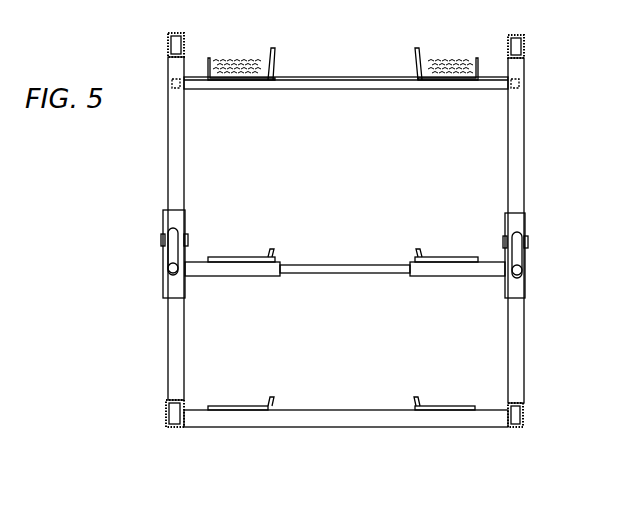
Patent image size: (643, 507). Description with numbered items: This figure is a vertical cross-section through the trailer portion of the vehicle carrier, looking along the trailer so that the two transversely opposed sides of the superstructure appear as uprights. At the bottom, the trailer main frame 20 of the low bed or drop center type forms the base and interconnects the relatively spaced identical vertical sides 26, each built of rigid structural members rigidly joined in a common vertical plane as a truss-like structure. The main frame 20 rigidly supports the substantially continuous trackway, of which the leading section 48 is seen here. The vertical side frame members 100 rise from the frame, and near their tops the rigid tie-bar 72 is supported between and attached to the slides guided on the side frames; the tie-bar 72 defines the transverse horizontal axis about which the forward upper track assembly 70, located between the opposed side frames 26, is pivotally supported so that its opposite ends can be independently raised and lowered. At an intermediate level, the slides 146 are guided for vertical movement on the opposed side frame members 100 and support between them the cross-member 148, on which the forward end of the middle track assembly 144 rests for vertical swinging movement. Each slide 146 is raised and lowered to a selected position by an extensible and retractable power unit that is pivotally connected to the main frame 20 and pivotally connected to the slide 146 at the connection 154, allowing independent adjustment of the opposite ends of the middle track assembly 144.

The main frame 20 is at (332, 410).
The vertical sides 26 is at (167, 43).
The leading section 48 is at (236, 406).
The forward upper track assembly 70 is at (247, 58).
The tie-bar 72 is at (353, 89).
The vertical side frame member 100 is at (168, 157).
The middle track assembly 144 is at (245, 257).
The slides 146 is at (165, 283).
The cross-member 148 is at (375, 265).
The pivotal connection 154 is at (162, 238).